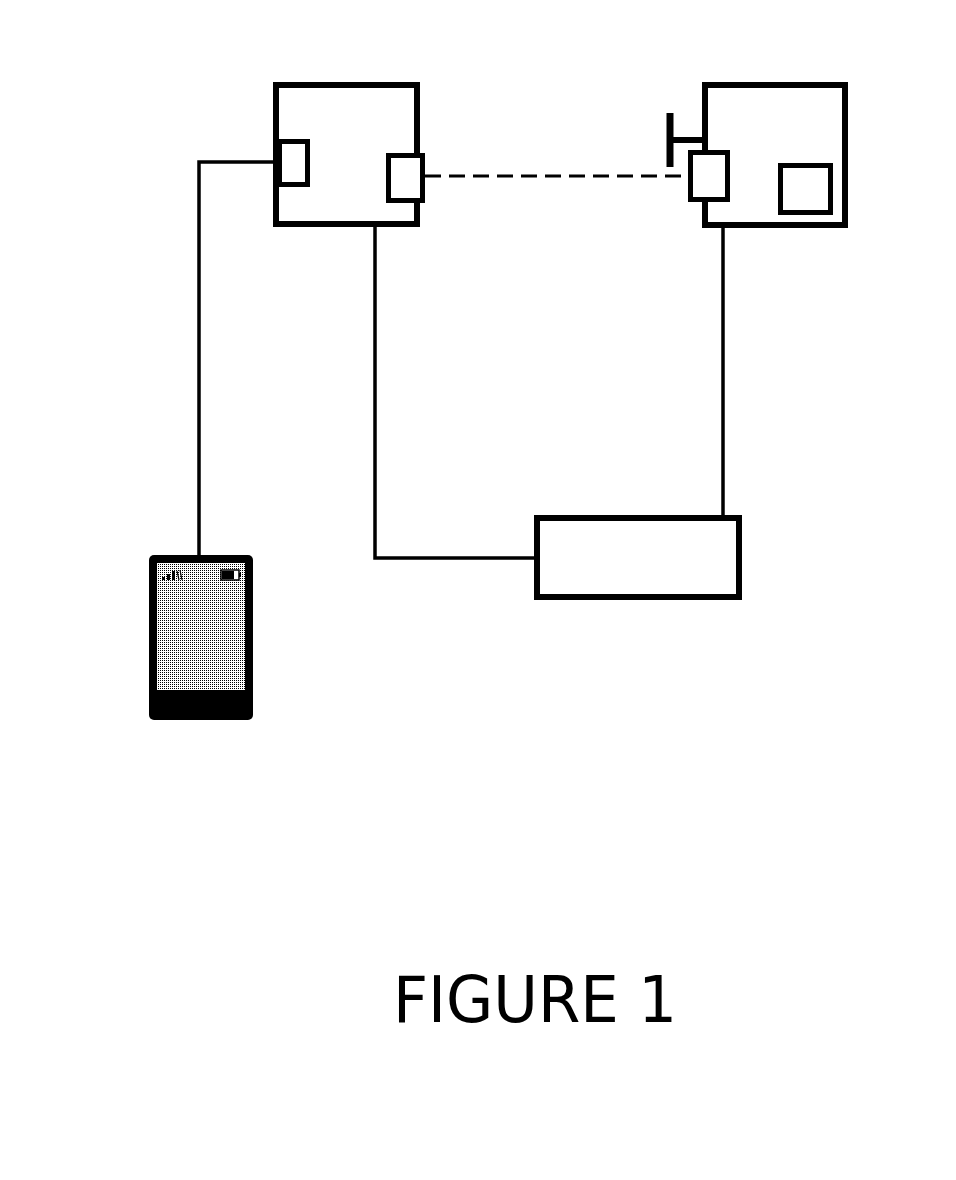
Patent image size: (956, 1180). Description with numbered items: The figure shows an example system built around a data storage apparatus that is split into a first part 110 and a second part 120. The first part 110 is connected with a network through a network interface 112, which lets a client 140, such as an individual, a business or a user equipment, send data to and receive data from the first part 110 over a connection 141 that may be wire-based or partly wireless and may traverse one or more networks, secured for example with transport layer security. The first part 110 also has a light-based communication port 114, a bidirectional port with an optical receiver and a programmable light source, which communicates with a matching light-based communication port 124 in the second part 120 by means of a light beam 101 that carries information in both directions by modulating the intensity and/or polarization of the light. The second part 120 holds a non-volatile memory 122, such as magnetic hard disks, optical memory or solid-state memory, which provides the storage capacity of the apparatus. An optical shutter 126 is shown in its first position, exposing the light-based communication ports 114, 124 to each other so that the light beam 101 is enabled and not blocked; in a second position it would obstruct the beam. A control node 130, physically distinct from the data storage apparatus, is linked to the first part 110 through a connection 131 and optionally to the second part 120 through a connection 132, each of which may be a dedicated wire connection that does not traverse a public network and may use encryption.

The light beam 101 is at (551, 176).
The first part 110 is at (408, 128).
The network interface 112 is at (287, 158).
The light-based communication port 114 is at (403, 182).
The second part 120 is at (837, 128).
The non-volatile memory 122 is at (803, 187).
The light-based communication port 124 is at (700, 184).
The optical shutter 126 is at (668, 130).
The control node 130 is at (723, 561).
The connection 131 is at (477, 560).
The connection 132 is at (722, 450).
The client 140 is at (210, 668).
The connection 141 is at (199, 410).